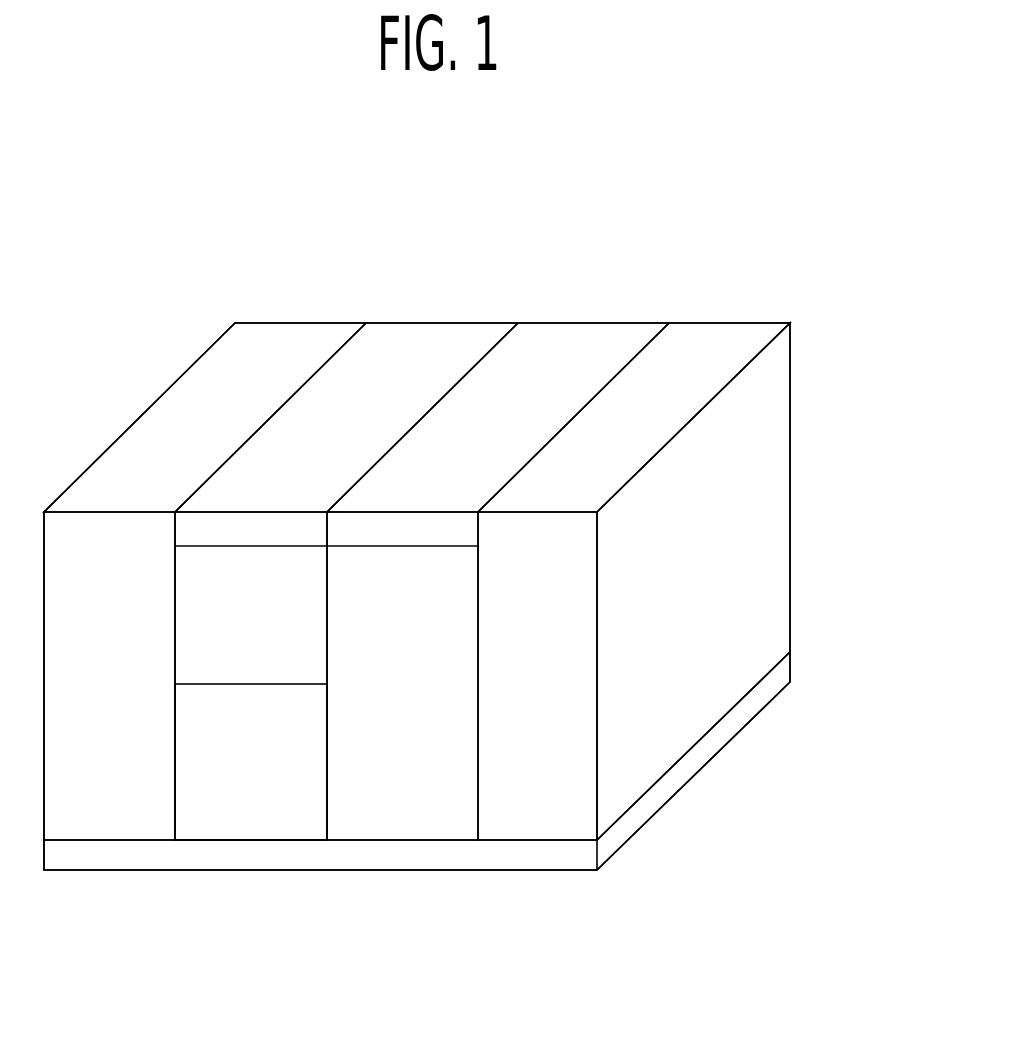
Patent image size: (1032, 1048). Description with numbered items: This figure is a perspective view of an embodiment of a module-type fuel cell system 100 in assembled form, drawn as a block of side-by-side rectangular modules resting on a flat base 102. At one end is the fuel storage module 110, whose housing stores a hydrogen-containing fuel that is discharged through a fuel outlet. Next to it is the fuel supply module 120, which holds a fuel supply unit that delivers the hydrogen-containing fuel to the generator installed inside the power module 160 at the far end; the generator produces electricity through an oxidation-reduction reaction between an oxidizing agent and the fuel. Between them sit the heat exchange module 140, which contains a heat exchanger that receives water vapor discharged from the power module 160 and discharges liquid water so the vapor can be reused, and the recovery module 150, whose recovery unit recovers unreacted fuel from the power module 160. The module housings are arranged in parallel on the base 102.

The module-type fuel cell system 100 is at (275, 201).
The base 102 is at (780, 677).
The fuel storage module 110 is at (292, 323).
The fuel supply module 120 is at (281, 802).
The heat exchange module 140 is at (292, 323).
The recovery module 150 is at (498, 520).
The power module 160 is at (646, 520).